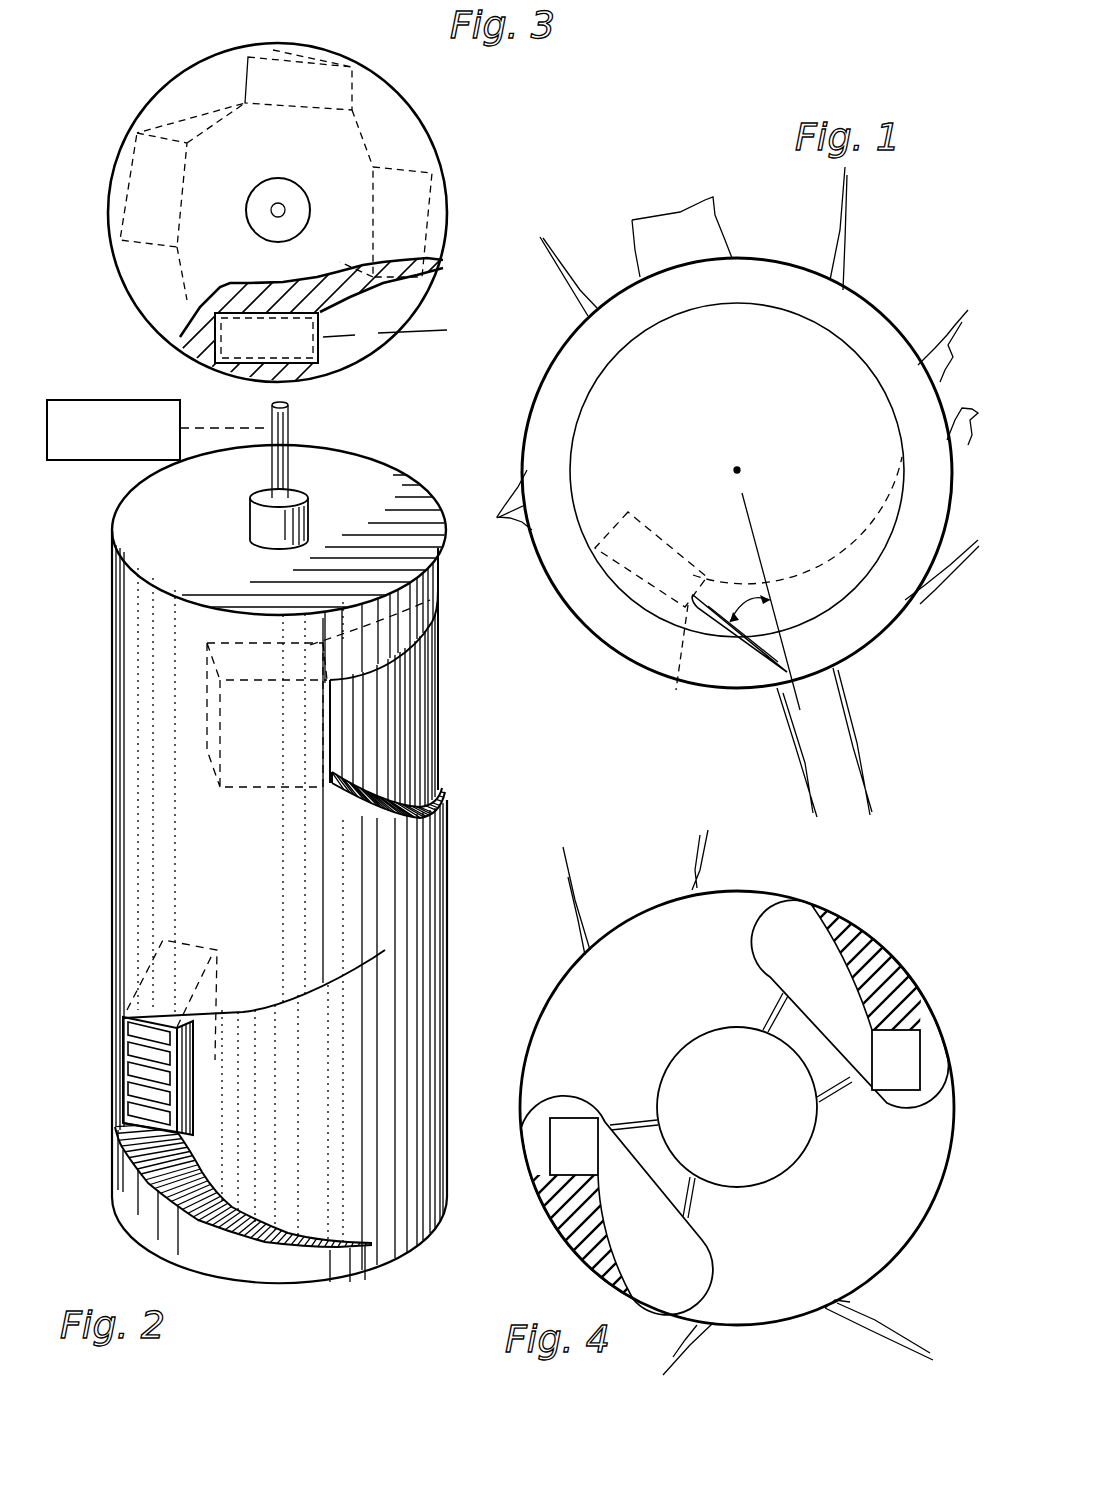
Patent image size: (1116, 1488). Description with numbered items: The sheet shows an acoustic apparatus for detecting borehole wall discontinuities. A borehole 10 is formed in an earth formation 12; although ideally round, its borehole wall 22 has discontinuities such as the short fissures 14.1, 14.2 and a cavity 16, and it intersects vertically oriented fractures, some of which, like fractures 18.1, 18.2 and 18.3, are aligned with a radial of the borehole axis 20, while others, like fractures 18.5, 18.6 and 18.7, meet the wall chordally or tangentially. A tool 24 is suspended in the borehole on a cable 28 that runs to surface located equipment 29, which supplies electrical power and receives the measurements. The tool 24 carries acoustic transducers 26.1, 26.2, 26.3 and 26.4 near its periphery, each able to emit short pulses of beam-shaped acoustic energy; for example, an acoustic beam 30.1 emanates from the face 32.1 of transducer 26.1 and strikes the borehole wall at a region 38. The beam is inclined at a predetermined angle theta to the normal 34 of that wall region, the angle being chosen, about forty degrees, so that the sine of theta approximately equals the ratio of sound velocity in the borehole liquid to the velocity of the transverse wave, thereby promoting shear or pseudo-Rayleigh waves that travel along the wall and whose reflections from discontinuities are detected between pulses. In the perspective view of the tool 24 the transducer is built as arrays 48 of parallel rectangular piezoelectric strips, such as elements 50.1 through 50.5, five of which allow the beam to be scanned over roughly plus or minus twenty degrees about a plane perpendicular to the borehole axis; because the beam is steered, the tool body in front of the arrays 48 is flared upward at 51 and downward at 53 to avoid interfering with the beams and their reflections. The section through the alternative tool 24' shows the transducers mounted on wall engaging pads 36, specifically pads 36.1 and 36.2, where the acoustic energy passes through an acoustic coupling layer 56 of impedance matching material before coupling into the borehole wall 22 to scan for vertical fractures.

In FIG. 1, the borehole 10 is at (938, 524).
In FIG. 4, the borehole 10 is at (831, 1236).
In FIG. 1, the earth formation 12 is at (945, 636).
In FIG. 1, the short fissure 14.1 is at (973, 437).
In FIG. 1, the short fissure 14.2 is at (515, 497).
In FIG. 1, the cavity 16 is at (713, 218).
In FIG. 1, the vertical fracture 18.1 is at (790, 760).
In FIG. 4, the vertical fracture 18.1 is at (690, 1350).
In FIG. 1, the vertical fracture 18.2 is at (868, 775).
In FIG. 4, the vertical fracture 18.2 is at (870, 1322).
In FIG. 1, the vertical fracture 18.3 is at (565, 263).
In FIG. 1, the vertical fracture 18.5 is at (947, 577).
In FIG. 1, the vertical fracture 18.6 is at (951, 350).
In FIG. 1, the vertical fracture 18.7 is at (842, 240).
In FIG. 1, the borehole axis 20 is at (740, 470).
In FIG. 1, the borehole wall 22 is at (885, 328).
In FIG. 4, the borehole wall 22 is at (925, 1210).
In FIG. 3, the tool 24 is at (301, 212).
In FIG. 2, the tool 24 is at (306, 864).
In FIG. 1, the tool 24 is at (804, 572).
In FIG. 4, the tool 24' is at (737, 1080).
In FIG. 3, the acoustic transducer 26.1 is at (215, 347).
In FIG. 2, the acoustic transducer 26.1 is at (228, 643).
In FIG. 1, the acoustic transducer 26.1 is at (570, 587).
In FIG. 4, the acoustic transducer 26.1 is at (560, 1147).
In FIG. 3, the acoustic transducer 26.2 is at (425, 199).
In FIG. 4, the acoustic transducer 26.2 is at (905, 1057).
In FIG. 3, the acoustic transducer 26.3 is at (323, 50).
In FIG. 3, the acoustic transducer 26.4 is at (120, 200).
In FIG. 2, the acoustic transducer 26.4 is at (140, 980).
In FIG. 2, the cable 28 is at (280, 466).
In FIG. 2, the surface located equipment 29 is at (100, 400).
In FIG. 3, the acoustic beam 30.1 is at (362, 337).
In FIG. 1, the acoustic beam 30.1 is at (753, 657).
In FIG. 3, the transducer face 32.1 is at (320, 358).
In FIG. 1, the transducer face 32.1 is at (670, 671).
In FIG. 1, the normal 34 is at (803, 703).
In FIG. 1, the pads 36 is at (733, 256).
In FIG. 4, the pad 36.1 is at (575, 1103).
In FIG. 4, the pad 36.2 is at (888, 1110).
In FIG. 1, the region 38 is at (800, 673).
In FIG. 2, the arrays 48 is at (123, 1075).
In FIG. 2, the piezoelectric element 50.1 is at (133, 1033).
In FIG. 2, the piezoelectric element 50.5 is at (127, 1110).
In FIG. 2, the upward flare 51 is at (437, 607).
In FIG. 2, the downward flare 53 is at (440, 792).
In FIG. 4, the acoustic coupling layer 56 is at (893, 965).